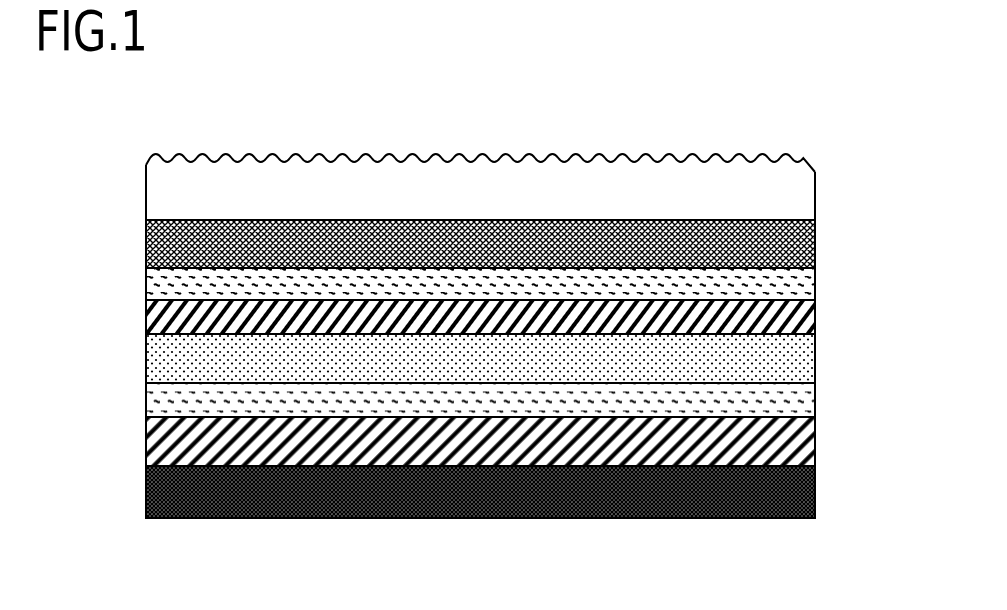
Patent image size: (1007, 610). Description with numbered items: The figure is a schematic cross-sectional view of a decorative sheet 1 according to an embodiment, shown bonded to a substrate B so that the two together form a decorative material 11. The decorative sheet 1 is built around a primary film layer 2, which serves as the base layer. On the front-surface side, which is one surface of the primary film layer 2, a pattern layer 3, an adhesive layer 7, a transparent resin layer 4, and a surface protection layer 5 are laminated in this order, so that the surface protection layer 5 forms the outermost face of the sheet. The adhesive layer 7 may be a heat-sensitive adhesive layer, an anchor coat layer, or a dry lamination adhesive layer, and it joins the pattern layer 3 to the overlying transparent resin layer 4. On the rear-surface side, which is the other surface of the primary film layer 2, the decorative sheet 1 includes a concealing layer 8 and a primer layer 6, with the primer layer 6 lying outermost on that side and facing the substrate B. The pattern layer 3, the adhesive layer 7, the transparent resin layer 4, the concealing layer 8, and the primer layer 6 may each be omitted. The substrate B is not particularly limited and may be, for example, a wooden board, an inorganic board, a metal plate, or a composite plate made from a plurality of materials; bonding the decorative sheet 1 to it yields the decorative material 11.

The decorative material 11 is at (858, 71).
The decorative sheet 1 is at (900, 182).
The surface protection layer 5 is at (787, 200).
The transparent resin layer 4 is at (787, 248).
The adhesive layer 7 is at (787, 283).
The pattern layer 3 is at (787, 320).
The primary film layer 2 is at (787, 360).
The concealing layer 8 is at (787, 401).
The primer layer 6 is at (787, 453).
The substrate B is at (787, 495).